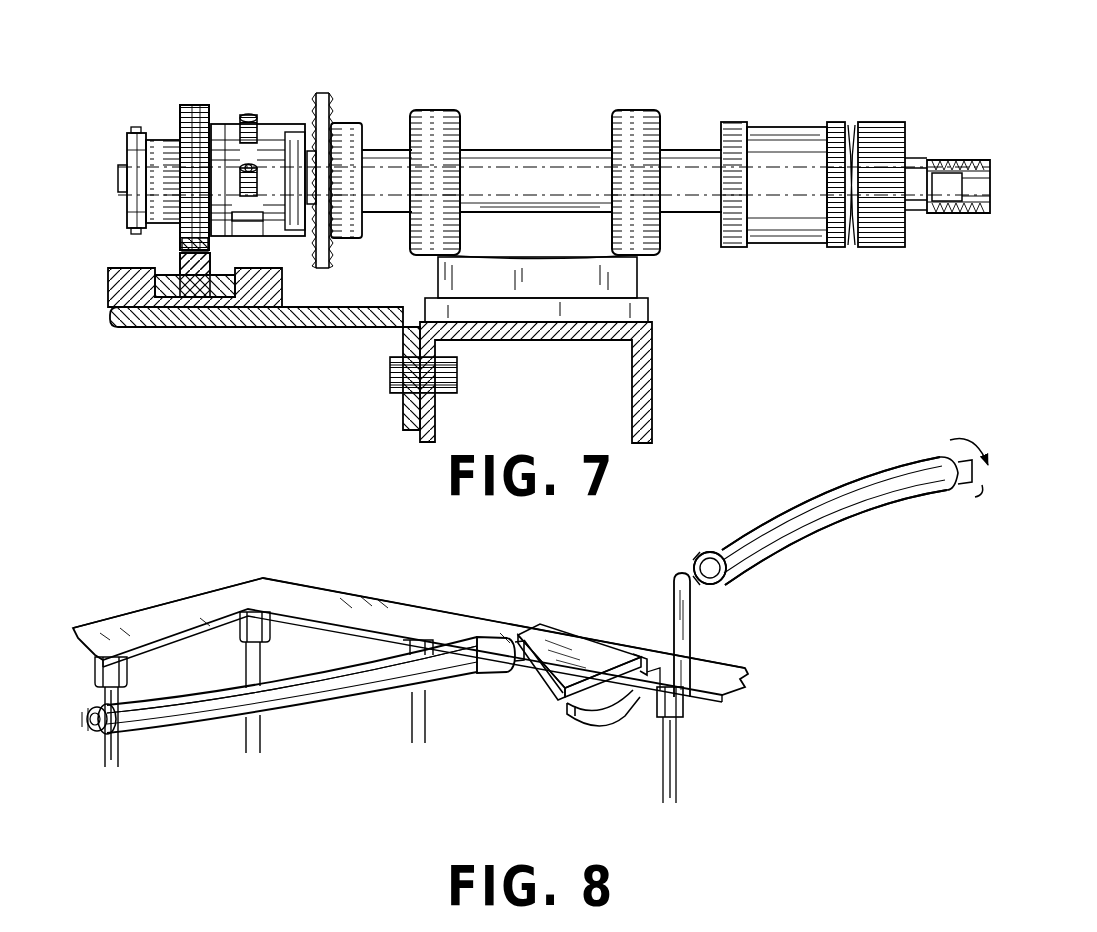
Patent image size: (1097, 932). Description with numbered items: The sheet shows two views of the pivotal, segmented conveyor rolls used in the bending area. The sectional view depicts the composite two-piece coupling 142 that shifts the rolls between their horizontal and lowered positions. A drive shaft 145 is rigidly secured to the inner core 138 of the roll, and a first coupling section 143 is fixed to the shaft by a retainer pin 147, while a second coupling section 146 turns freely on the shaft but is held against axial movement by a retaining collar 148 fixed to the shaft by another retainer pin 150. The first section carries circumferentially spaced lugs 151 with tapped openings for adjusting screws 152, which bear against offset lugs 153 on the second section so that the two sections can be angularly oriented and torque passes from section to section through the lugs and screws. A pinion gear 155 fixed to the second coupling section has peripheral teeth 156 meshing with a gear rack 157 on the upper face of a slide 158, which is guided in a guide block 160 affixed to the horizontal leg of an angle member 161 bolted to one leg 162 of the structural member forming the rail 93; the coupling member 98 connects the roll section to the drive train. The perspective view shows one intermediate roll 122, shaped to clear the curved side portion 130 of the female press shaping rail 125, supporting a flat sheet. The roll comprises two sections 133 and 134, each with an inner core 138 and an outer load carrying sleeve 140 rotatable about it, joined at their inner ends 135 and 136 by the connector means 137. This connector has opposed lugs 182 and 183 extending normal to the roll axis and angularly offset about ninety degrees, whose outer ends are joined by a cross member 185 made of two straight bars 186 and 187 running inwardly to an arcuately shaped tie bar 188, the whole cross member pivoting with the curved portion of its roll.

In FIG. 7, the rail 93 is at (657, 370).
In FIG. 7, the coupling member 98 is at (821, 263).
In FIG. 8, the intermediate roll 122 is at (883, 522).
In FIG. 8, the shaping rail 125 is at (298, 578).
In FIG. 8, the curved side portion 130 is at (362, 605).
In FIG. 8, the roll section 133 is at (330, 712).
In FIG. 8, the roll section 134 is at (792, 548).
In FIG. 8, the inner end 135 is at (520, 638).
In FIG. 8, the inner end 136 is at (693, 566).
In FIG. 8, the connector means 137 is at (550, 728).
In FIG. 7, the inner core 138 is at (972, 215).
In FIG. 8, the inner core 138 is at (504, 640).
In FIG. 7, the outer load carrying sleeve 140 is at (955, 160).
In FIG. 8, the outer load carrying sleeve 140 is at (198, 722).
In FIG. 7, the coupling 142 is at (162, 72).
In FIG. 7, the first coupling section 143 is at (250, 104).
In FIG. 7, the drive shaft 145 is at (386, 165).
In FIG. 7, the second coupling section 146 is at (160, 103).
In FIG. 7, the retainer pin 147 is at (320, 95).
In FIG. 7, the retaining collar 148 is at (132, 150).
In FIG. 7, the retainer pin 150 is at (133, 230).
In FIG. 7, the lug 151 is at (262, 140).
In FIG. 7, the adjusting screw 152 is at (241, 168).
In FIG. 7, the lug 153 is at (257, 223).
In FIG. 7, the pinion gear 155 is at (185, 148).
In FIG. 7, the peripheral teeth 156 is at (185, 241).
In FIG. 7, the gear rack 157 is at (194, 270).
In FIG. 7, the slide 158 is at (172, 290).
In FIG. 7, the guide block 160 is at (110, 290).
In FIG. 7, the angle member 161 is at (338, 322).
In FIG. 7, the leg 162 is at (437, 414).
In FIG. 8, the lug 182 is at (537, 670).
In FIG. 8, the lug 183 is at (675, 612).
In FIG. 8, the cross member 185 is at (638, 714).
In FIG. 8, the straight bar 186 is at (604, 680).
In FIG. 8, the straight bar 187 is at (681, 716).
In FIG. 8, the tie bar 188 is at (606, 713).